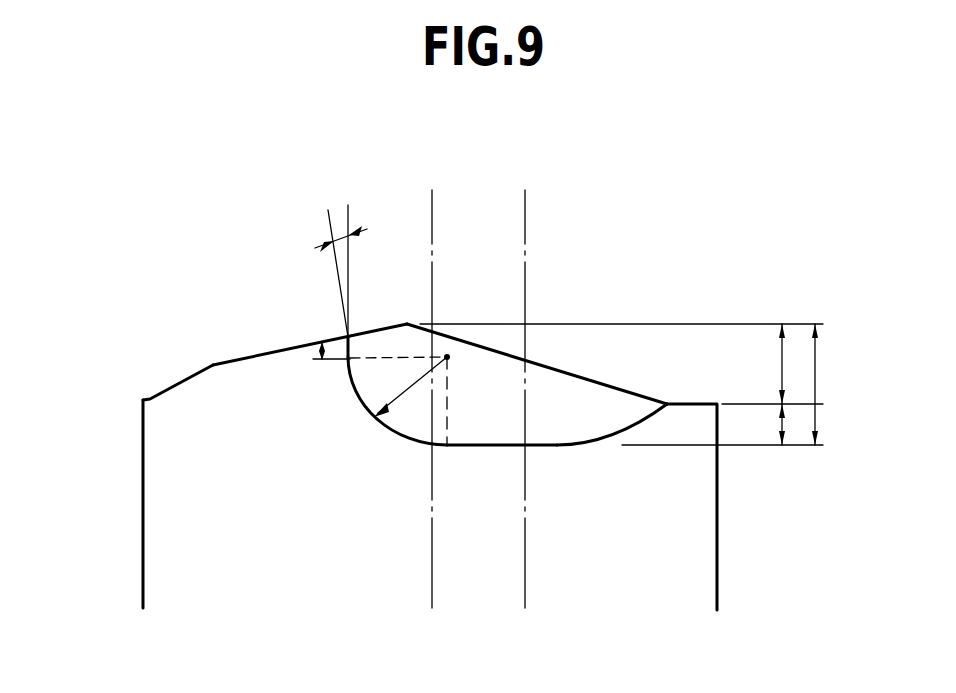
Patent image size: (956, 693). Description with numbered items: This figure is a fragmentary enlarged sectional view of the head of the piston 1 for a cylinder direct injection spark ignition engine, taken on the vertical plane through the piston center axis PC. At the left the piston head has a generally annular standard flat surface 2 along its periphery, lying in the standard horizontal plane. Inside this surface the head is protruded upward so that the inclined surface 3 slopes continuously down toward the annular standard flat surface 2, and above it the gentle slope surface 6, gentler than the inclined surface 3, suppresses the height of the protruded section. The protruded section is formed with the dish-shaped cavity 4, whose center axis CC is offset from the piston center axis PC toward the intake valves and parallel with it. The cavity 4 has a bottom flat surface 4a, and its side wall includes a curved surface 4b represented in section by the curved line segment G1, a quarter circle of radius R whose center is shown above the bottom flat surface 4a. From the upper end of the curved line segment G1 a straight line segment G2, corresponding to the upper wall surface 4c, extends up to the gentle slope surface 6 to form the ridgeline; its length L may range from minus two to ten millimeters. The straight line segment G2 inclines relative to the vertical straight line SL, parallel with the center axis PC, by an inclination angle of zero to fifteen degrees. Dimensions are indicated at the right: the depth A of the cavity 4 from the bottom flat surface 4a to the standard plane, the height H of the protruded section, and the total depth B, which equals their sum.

The piston 1 is at (718, 540).
The annular standard flat surface 2 is at (143, 400).
The inclined surface 3 is at (168, 388).
The cavity 4 is at (408, 443).
The bottom flat surface 4a is at (558, 443).
The curved surface 4b is at (395, 428).
The upper wall surface 4c is at (353, 337).
The gentle slope surface 6 is at (263, 353).
The vertical straight line SL is at (349, 218).
The length of the straight line segment G2 L is at (333, 343).
The curved line segment G1 is at (350, 393).
The straight line segment G2 is at (333, 359).
The radius of curvature R is at (400, 399).
The height of the protruded section H is at (792, 364).
The depth of the cavity A is at (772, 424).
The total depth B is at (628, 384).
The center axis of the piston PC is at (430, 568).
The center axis of the cavity CC is at (522, 570).